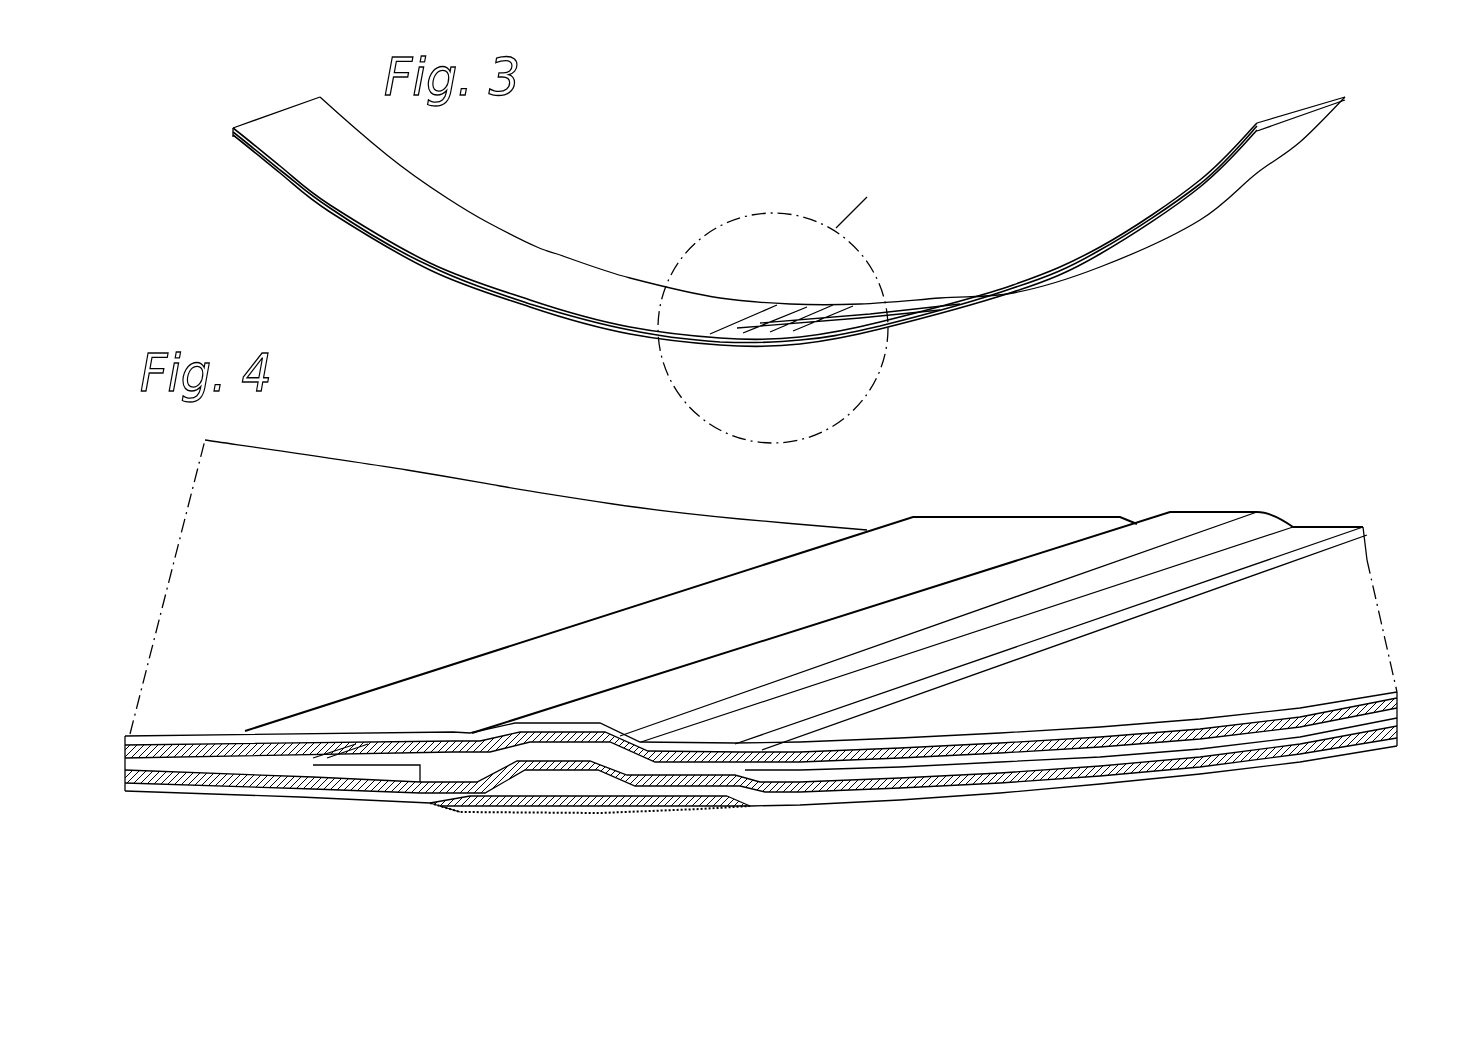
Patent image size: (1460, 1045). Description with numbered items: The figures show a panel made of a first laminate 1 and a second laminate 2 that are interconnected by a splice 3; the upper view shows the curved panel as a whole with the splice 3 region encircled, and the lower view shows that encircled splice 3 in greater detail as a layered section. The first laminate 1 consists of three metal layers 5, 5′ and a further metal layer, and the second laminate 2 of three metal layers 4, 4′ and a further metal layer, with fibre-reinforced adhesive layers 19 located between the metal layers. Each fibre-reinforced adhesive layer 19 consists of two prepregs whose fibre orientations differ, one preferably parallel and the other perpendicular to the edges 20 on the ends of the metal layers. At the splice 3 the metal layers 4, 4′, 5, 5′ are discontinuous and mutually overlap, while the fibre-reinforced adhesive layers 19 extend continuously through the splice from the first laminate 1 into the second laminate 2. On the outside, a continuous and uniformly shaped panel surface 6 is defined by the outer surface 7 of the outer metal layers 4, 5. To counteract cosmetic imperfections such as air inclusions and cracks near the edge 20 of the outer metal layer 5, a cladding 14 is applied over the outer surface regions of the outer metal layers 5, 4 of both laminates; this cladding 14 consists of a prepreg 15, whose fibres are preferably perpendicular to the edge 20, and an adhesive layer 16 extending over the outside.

In FIG. 3, the first laminate 1 is at (568, 240).
In FIG. 4, the first laminate 1 is at (522, 482).
In FIG. 3, the second laminate 2 is at (1034, 260).
In FIG. 4, the second laminate 2 is at (1392, 615).
In FIG. 3, the splice 3 is at (776, 243).
In FIG. 4, the splice 3 is at (535, 829).
In FIG. 4, the outer metal layer 4 is at (1398, 746).
In FIG. 4, the metal layer 4′ is at (1396, 720).
In FIG. 4, the outer metal layer 5 is at (128, 788).
In FIG. 4, the metal layer 5′ is at (130, 764).
In FIG. 3, the panel surface 6 is at (1152, 260).
In FIG. 4, the panel surface 6 is at (683, 835).
In FIG. 3, the outer surface 7 is at (440, 278).
In FIG. 4, the outer surface 7 is at (258, 801).
In FIG. 4, the cladding 14 is at (611, 819).
In FIG. 4, the prepreg 15 is at (497, 799).
In FIG. 4, the adhesive layer 16 is at (684, 804).
In FIG. 4, the fibre-reinforced adhesive layer 19 is at (1399, 704).
In FIG. 4, the edge 20 is at (802, 554).